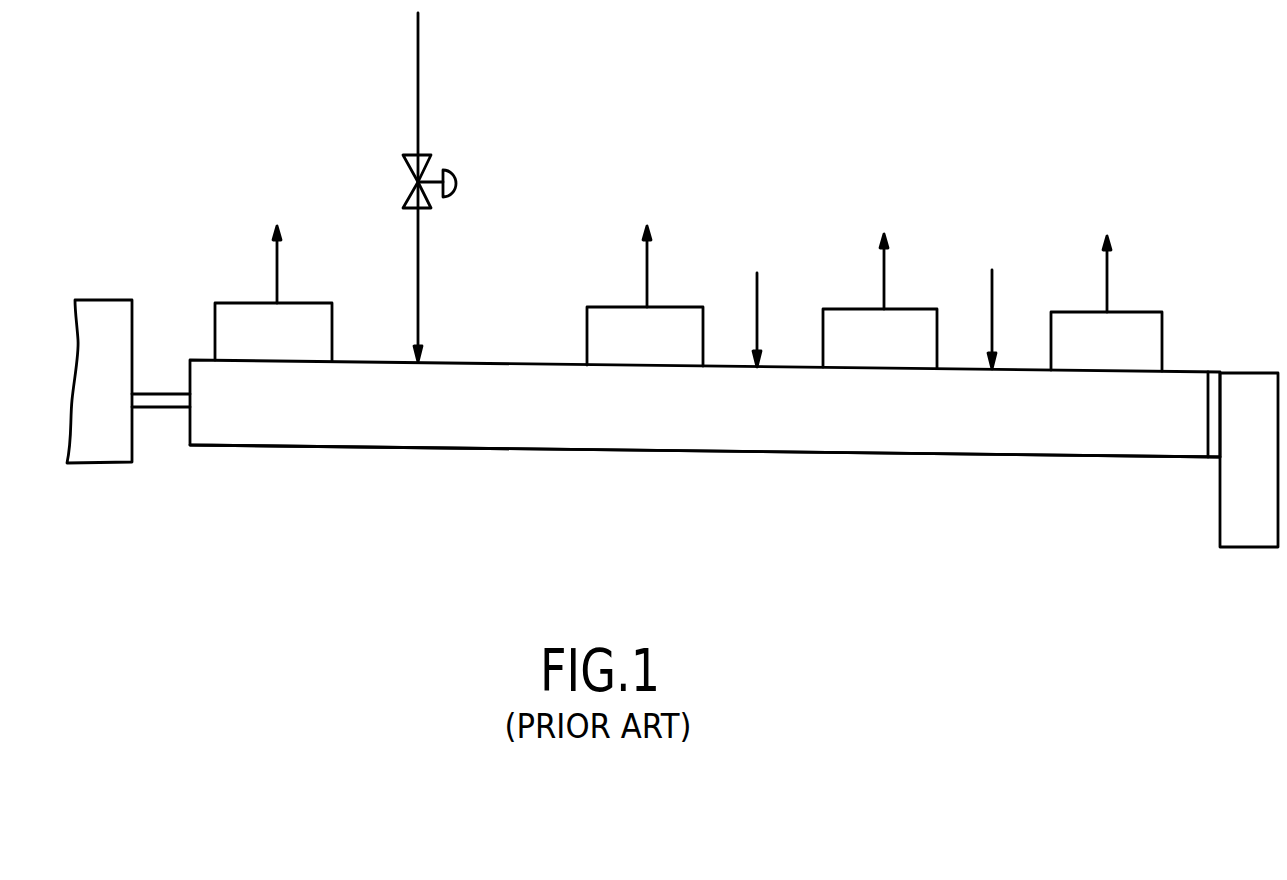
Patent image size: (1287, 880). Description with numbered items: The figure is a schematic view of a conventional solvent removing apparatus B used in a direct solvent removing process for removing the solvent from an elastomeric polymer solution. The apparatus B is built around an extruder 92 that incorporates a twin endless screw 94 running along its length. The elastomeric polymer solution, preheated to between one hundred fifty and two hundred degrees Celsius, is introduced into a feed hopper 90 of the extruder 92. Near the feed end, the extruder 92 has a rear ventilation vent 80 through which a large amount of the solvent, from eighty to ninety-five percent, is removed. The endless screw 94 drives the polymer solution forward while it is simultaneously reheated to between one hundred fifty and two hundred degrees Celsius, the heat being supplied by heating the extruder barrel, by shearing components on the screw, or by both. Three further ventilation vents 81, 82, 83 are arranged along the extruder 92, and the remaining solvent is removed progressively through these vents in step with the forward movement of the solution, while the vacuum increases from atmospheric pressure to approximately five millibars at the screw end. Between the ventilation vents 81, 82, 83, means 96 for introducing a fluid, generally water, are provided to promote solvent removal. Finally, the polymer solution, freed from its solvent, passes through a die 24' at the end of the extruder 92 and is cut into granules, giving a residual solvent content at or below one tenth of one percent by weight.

The rear ventilation vent 80 is at (243, 323).
The ventilation vent 81 is at (658, 322).
The ventilation vent 82 is at (908, 308).
The ventilation vent 83 is at (1132, 310).
The feed hopper 90 is at (420, 288).
The extruder 92 is at (637, 450).
The twin endless screw 94 is at (363, 432).
The means for introducing a fluid 96 is at (760, 320).
The die 24' is at (1243, 415).
The solvent removing apparatus B is at (752, 233).